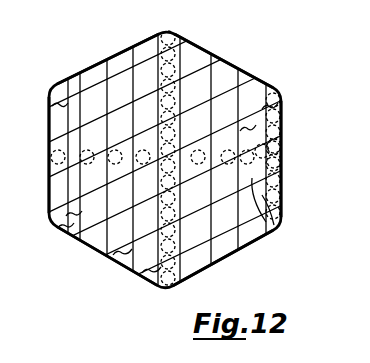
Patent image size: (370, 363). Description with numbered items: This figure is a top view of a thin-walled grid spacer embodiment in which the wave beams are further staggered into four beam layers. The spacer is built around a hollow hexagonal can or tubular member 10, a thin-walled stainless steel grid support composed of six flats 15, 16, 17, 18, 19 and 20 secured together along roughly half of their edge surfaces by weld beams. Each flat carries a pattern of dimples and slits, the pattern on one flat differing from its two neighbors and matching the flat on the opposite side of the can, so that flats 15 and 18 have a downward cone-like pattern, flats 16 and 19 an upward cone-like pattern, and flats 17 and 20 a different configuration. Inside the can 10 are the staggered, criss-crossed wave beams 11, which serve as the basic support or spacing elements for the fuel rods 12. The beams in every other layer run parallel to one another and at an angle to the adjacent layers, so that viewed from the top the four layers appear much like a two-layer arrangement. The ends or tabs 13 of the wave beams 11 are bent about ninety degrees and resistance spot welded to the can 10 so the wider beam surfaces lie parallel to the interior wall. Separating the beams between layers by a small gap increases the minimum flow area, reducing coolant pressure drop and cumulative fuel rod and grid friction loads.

The hollow hexagonal can 10 is at (128, 280).
The wave beams 11 is at (147, 53).
The fuel rod 12 is at (179, 25).
The tabs 13 is at (284, 123).
The flat 15 is at (283, 100).
The flat 16 is at (242, 254).
The flat 17 is at (97, 254).
The flat 18 is at (47, 189).
The flat 19 is at (107, 60).
The flat 20 is at (258, 82).